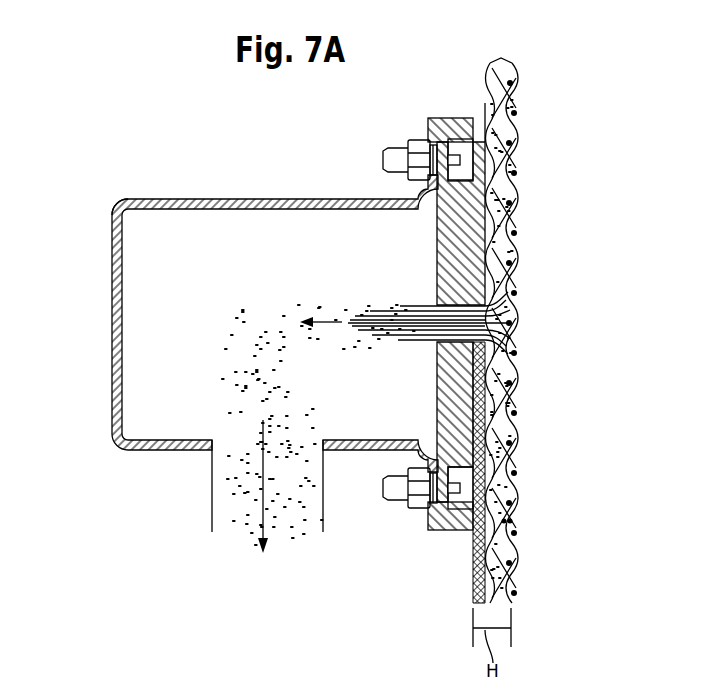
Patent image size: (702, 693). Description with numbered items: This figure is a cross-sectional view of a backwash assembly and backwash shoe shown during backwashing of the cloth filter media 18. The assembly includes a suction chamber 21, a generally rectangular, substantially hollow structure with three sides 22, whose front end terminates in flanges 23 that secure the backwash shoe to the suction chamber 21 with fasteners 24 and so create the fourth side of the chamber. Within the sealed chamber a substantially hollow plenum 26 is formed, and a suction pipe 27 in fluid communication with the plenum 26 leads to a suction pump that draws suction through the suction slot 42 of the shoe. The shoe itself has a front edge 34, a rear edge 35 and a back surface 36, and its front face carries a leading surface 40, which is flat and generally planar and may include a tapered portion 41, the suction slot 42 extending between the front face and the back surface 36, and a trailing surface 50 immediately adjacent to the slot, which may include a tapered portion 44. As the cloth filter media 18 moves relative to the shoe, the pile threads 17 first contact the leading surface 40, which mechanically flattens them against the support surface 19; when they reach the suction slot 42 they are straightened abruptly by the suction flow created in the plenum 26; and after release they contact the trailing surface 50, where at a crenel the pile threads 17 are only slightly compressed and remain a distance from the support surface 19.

The pile threads 17 is at (394, 316).
The cloth filter media 18 is at (496, 60).
The support surface 19 is at (518, 85).
The suction chamber 21 is at (90, 322).
The sides 22 is at (183, 200).
The flanges 23 is at (428, 128).
The fasteners 24 is at (385, 160).
The plenum 26 is at (135, 222).
The suction pipe 27 is at (212, 507).
The front edge 34 is at (455, 118).
The rear edge 35 is at (455, 530).
The back surface 36 is at (437, 380).
The leading surface 40 is at (490, 232).
The tapered portion 41 is at (480, 118).
The suction slot 42 is at (506, 325).
The tapered portion 44 is at (503, 512).
The trailing surface 50 is at (510, 458).